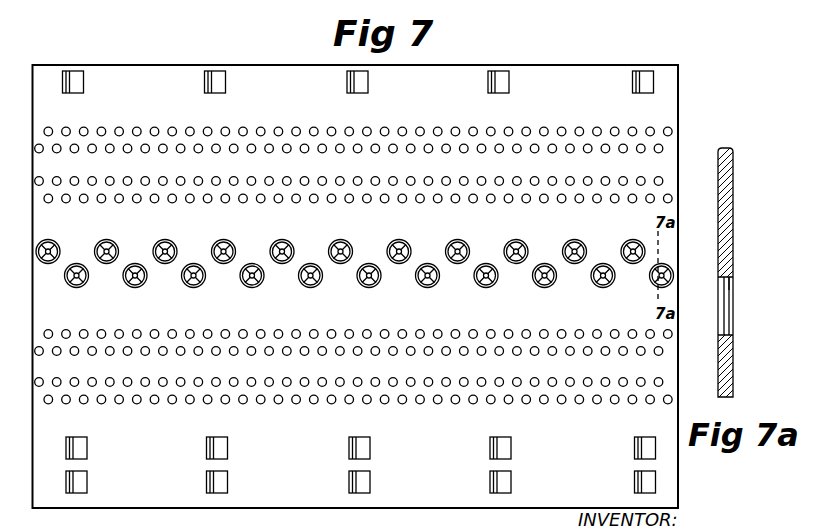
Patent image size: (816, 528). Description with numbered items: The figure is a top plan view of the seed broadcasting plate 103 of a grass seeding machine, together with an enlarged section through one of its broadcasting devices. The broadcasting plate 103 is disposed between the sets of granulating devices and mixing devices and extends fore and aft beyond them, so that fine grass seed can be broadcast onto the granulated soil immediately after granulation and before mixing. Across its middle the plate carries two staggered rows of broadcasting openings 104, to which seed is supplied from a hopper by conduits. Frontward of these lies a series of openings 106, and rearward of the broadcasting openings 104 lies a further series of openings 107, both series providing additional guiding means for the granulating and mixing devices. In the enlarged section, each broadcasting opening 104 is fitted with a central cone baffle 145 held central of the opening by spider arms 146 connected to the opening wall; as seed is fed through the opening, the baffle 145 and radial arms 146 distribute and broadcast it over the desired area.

In FIG. 7, the broadcasting plate 103 is at (563, 77).
In FIG. 7A, the broadcasting plate 103 is at (737, 178).
In FIG. 7, the broadcasting openings 104 is at (160, 245).
In FIG. 7, the series of openings 106 is at (490, 128).
In FIG. 7, the series of openings 107 is at (430, 412).
In FIG. 7A, the central cone baffle 145 is at (724, 310).
In FIG. 7A, the spider arms 146 is at (729, 281).